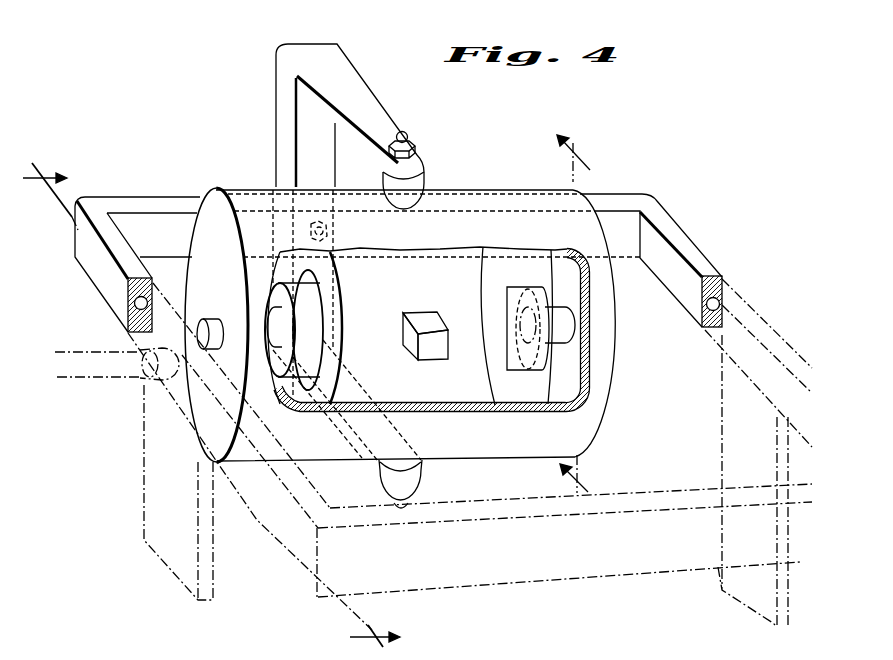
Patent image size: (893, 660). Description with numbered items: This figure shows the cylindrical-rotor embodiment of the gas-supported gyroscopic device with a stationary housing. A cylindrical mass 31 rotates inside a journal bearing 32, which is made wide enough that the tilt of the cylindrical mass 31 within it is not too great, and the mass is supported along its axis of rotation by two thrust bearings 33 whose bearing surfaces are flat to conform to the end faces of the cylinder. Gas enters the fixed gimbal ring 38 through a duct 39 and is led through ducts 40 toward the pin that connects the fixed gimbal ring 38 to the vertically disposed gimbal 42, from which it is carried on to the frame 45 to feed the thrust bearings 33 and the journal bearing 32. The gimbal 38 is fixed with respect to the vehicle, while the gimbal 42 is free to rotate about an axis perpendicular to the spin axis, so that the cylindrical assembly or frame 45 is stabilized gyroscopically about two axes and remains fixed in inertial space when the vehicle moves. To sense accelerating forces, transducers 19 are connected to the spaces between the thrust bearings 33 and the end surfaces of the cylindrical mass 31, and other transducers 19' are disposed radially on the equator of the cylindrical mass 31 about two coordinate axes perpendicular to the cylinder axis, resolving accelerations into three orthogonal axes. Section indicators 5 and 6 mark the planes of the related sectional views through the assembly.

The section line 5- 5 is at (563, 307).
The section line 6- 6 is at (222, 407).
The transducer 19 is at (209, 311).
The radially disposed transducer 19' is at (432, 357).
The cylindrical mass 31 is at (515, 288).
The journal bearing 32 is at (488, 377).
The thrust bearing 33 is at (570, 325).
The fixed gimbal ring 38 is at (86, 269).
The duct 39 is at (100, 373).
The duct 40 is at (128, 313).
The vertically disposed gimbal 42 is at (277, 96).
The frame 45 is at (585, 197).